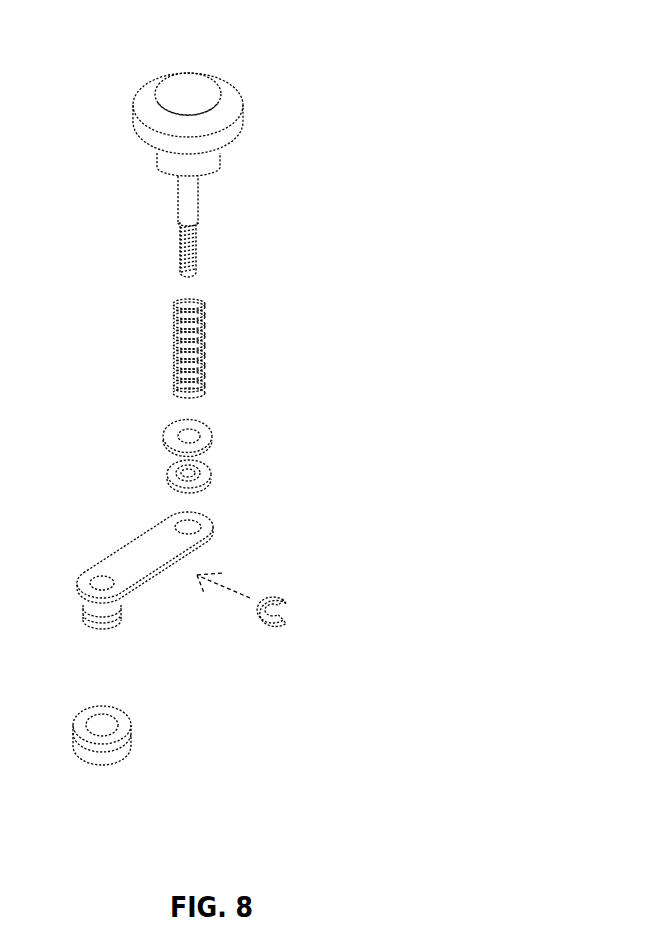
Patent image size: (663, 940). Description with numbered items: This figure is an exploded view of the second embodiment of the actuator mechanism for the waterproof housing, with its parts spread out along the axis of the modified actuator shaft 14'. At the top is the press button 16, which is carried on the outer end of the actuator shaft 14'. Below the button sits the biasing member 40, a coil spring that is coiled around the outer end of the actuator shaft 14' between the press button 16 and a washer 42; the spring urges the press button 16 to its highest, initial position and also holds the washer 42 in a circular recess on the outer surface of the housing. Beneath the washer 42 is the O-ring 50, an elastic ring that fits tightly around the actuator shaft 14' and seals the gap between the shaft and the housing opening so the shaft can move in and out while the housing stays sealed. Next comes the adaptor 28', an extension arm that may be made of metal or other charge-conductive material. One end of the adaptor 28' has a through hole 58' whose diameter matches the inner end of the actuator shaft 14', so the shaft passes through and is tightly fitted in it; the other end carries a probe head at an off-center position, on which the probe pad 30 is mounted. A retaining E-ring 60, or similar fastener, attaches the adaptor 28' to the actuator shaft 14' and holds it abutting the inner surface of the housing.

The press button 16 is at (238, 105).
The modified actuator shaft 14' is at (262, 208).
The biasing member 40 is at (203, 350).
The washer 42 is at (213, 432).
The O-ring 50 is at (208, 473).
The through hole 58' is at (129, 518).
The adaptor 28' is at (205, 565).
The E-ring 60 is at (292, 612).
The probe pad 30 is at (142, 733).